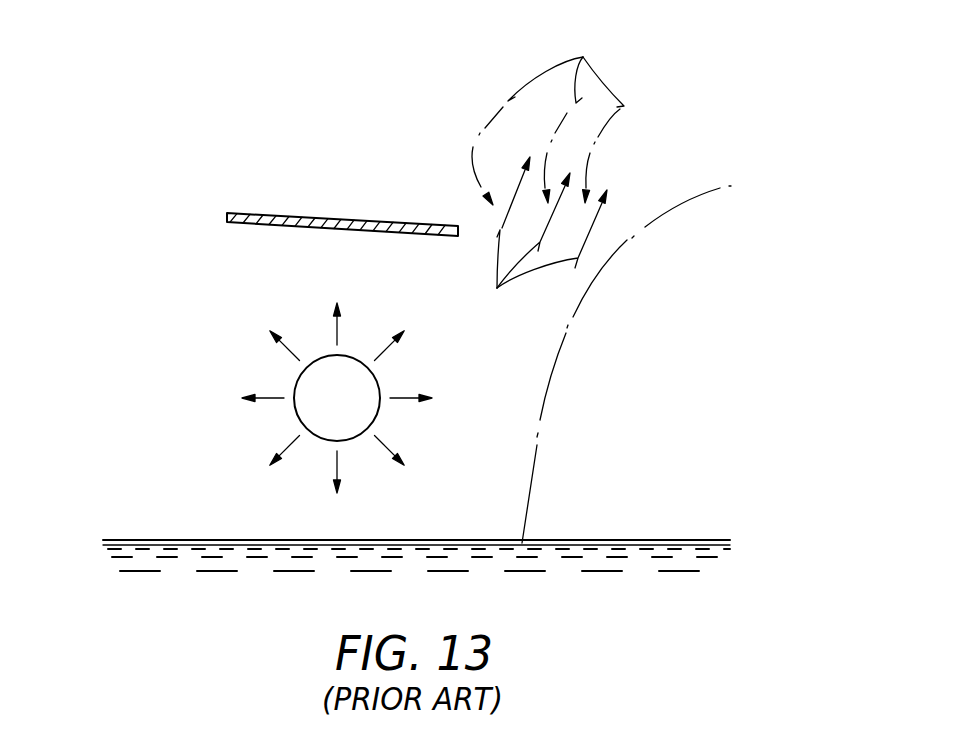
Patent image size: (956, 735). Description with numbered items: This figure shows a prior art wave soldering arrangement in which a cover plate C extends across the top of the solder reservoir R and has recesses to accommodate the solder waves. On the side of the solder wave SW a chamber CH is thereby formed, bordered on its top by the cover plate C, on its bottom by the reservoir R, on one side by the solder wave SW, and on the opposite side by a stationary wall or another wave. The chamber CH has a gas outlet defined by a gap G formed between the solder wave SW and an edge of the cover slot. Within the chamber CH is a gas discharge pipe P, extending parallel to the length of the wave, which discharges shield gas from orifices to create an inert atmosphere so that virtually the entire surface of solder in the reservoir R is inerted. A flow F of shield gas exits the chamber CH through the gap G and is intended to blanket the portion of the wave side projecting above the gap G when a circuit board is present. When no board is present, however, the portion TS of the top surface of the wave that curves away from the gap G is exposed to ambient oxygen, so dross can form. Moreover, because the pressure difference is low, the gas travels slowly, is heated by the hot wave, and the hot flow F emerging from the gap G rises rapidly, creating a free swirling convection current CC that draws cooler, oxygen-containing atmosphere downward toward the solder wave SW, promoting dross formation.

The cover plate C is at (329, 204).
The gap G is at (467, 216).
The chamber CH is at (407, 297).
The convection current CC is at (548, 117).
The flow of shield gas F is at (497, 288).
The portion of the top surface of the wave TS is at (651, 208).
The solder wave SW is at (540, 372).
The gas discharge pipe P is at (286, 374).
The reservoir R is at (163, 531).